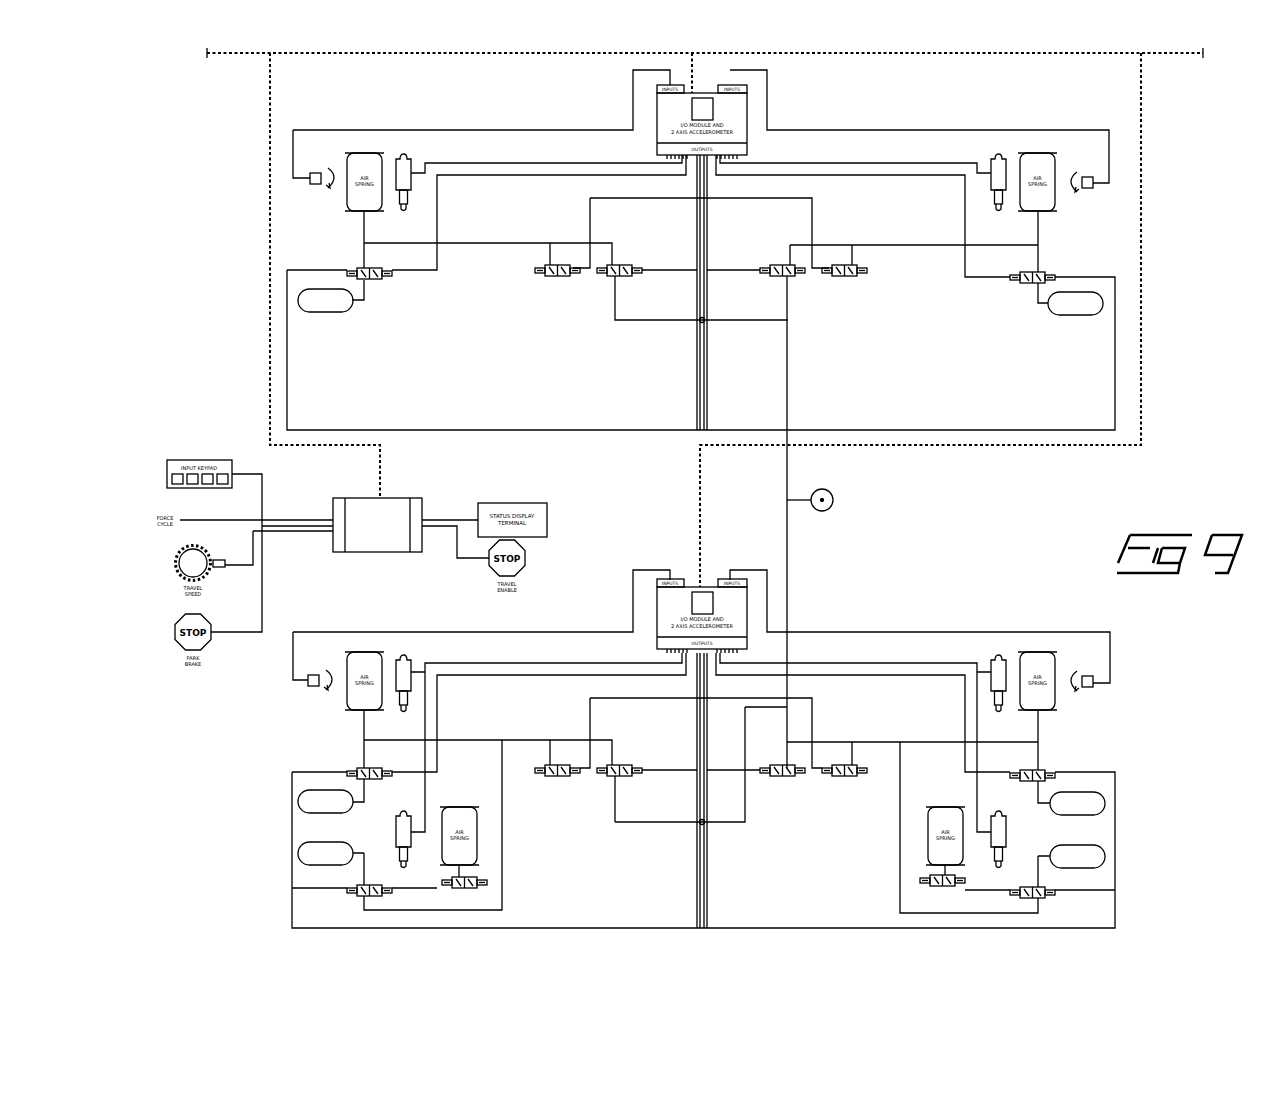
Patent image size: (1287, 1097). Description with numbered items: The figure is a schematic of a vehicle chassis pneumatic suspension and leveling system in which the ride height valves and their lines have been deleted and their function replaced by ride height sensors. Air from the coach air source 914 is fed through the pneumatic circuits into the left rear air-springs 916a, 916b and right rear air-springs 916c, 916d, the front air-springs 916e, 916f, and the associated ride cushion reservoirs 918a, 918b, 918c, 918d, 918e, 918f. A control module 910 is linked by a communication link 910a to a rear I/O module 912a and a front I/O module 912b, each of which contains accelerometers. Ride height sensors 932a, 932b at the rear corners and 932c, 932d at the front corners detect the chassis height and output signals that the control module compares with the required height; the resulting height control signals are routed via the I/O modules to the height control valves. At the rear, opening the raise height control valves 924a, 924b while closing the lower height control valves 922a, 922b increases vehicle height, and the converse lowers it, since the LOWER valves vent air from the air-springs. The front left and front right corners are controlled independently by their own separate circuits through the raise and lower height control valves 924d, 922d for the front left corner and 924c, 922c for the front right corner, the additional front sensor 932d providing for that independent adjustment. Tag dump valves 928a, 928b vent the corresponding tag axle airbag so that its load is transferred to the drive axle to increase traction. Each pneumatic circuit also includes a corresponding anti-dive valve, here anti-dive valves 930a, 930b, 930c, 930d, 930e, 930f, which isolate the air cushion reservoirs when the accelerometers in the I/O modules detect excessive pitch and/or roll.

The control module 910 is at (403, 503).
The communication link 910a is at (380, 462).
The I/O module 912a is at (735, 612).
The I/O module 912b is at (735, 112).
The coach air source 914 is at (834, 504).
The air-spring 916a is at (362, 693).
The air-spring 916b is at (468, 833).
The air-spring 916c is at (1038, 652).
The air-spring 916d is at (932, 833).
The air-spring 916e is at (360, 158).
The air-spring 916f is at (1042, 158).
The ride cushion reservoir 918a is at (307, 802).
The ride cushion reservoir 918b is at (308, 853).
The ride cushion reservoir 918c is at (1093, 802).
The ride cushion reservoir 918d is at (1093, 857).
The ride cushion reservoir 918e is at (343, 310).
The ride cushion reservoir 918f is at (1088, 303).
The lower height control valve 922a is at (553, 778).
The lower height control valve 922b is at (845, 777).
The lower height control valve 922c is at (838, 268).
The lower height control valve 922d is at (545, 276).
The raise height control valve 924a is at (622, 778).
The raise height control valve 924b is at (773, 778).
The raise height control valve 924c is at (783, 280).
The raise height control valve 924d is at (618, 279).
The tag dump valve 928a is at (477, 885).
The tag dump valve 928b is at (920, 885).
The anti-dive valve 930a is at (358, 770).
The anti-dive valve 930b is at (355, 888).
The anti-dive valve 930c is at (1043, 773).
The anti-dive valve 930d is at (1045, 888).
The anti-dive valve 930e is at (382, 283).
The anti-dive valve 930f is at (1045, 275).
The ride height sensor 932a is at (316, 686).
The ride height sensor 932b is at (1093, 688).
The ride height sensor 932c is at (318, 183).
The ride height sensor 932d is at (1093, 189).